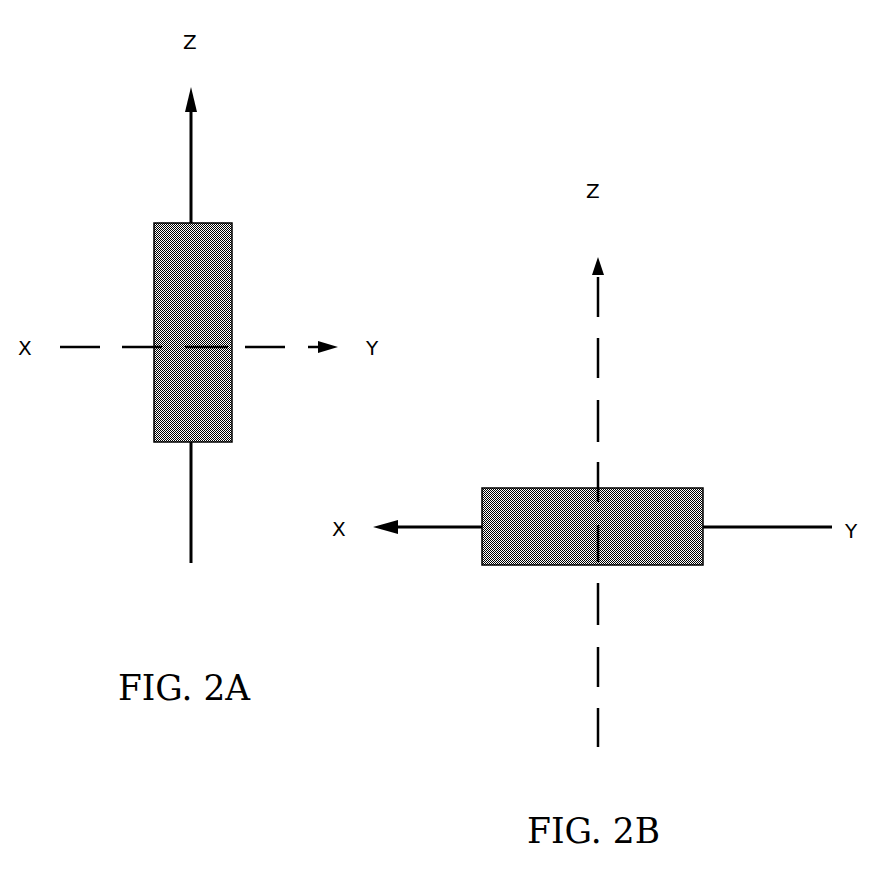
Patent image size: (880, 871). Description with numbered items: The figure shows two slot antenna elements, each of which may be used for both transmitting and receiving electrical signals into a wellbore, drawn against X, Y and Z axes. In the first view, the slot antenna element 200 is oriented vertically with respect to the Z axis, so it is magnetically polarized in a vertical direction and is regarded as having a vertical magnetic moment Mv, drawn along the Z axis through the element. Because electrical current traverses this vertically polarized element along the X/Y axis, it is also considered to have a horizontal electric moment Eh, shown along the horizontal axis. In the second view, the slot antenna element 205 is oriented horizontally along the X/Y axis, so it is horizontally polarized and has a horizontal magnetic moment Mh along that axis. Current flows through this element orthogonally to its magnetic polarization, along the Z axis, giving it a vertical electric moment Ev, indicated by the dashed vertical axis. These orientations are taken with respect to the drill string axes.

In FIG. 2A, the vertically polarized slot antenna element 200 is at (121, 201).
In FIG. 2B, the horizontally polarized slot antenna element 205 is at (506, 435).
In FIG. 2A, the vertical magnetic moment Mv is at (193, 140).
In FIG. 2A, the horizontal electric moment Eh is at (255, 347).
In FIG. 2B, the vertical electric moment Ev is at (600, 343).
In FIG. 2B, the horizontal magnetic moment Mh is at (728, 527).